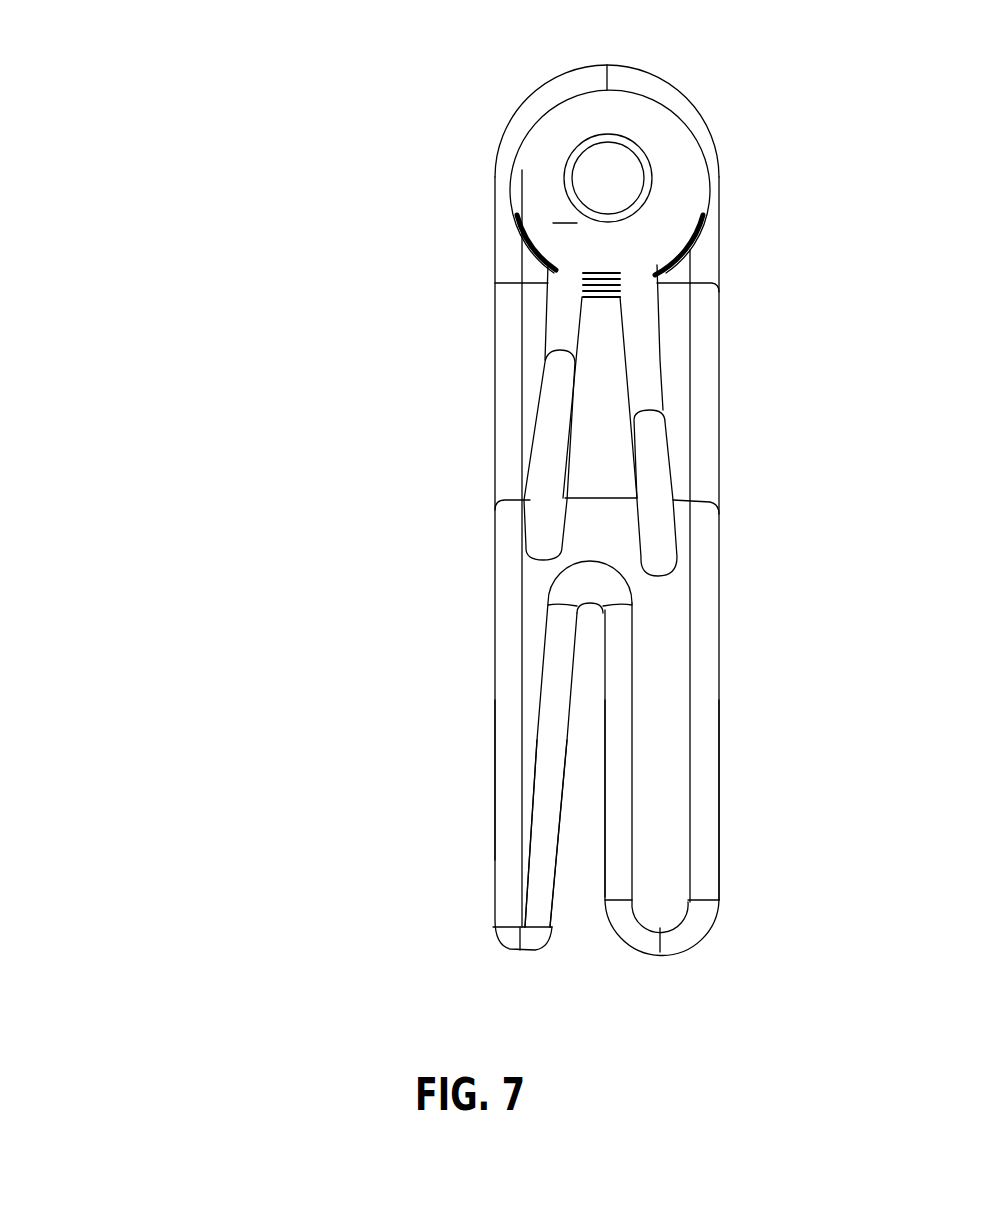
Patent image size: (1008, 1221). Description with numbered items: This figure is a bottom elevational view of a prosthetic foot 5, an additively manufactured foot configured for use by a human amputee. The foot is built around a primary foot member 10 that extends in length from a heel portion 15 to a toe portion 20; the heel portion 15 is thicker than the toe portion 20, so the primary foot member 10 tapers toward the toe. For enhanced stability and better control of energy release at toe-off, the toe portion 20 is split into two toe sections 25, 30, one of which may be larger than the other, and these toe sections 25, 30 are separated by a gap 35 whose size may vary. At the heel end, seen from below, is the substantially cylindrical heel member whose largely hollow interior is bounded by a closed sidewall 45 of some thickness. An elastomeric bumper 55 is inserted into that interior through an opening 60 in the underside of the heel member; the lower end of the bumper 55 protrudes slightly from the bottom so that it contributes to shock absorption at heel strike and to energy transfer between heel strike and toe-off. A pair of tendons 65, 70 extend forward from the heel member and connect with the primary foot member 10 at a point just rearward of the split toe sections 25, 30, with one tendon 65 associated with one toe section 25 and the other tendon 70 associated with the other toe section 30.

The prosthetic foot 5 is at (173, 233).
The primary foot member 10 is at (512, 600).
The heel portion 15 is at (487, 87).
The toe portion 20 is at (472, 768).
The toe section 25 is at (698, 845).
The toe section 30 is at (538, 842).
The gap 35 is at (595, 625).
The closed sidewall 45 is at (718, 155).
The bumper 55 is at (625, 170).
The opening 60 is at (563, 187).
The tendon 65 is at (650, 402).
The tendon 70 is at (545, 423).